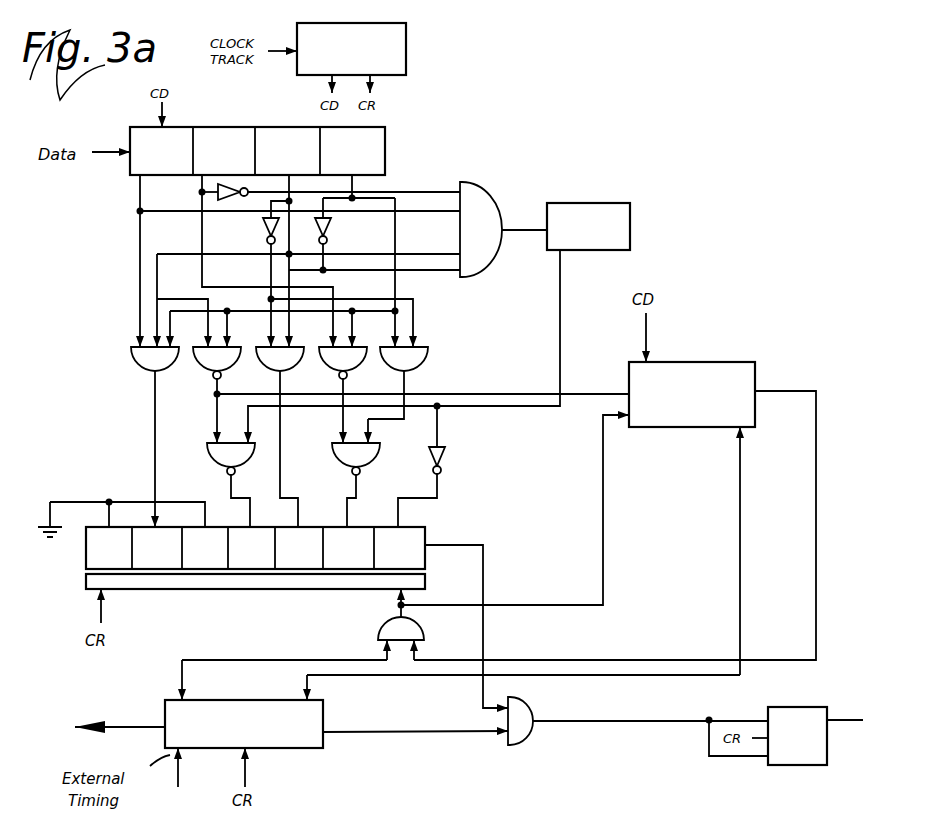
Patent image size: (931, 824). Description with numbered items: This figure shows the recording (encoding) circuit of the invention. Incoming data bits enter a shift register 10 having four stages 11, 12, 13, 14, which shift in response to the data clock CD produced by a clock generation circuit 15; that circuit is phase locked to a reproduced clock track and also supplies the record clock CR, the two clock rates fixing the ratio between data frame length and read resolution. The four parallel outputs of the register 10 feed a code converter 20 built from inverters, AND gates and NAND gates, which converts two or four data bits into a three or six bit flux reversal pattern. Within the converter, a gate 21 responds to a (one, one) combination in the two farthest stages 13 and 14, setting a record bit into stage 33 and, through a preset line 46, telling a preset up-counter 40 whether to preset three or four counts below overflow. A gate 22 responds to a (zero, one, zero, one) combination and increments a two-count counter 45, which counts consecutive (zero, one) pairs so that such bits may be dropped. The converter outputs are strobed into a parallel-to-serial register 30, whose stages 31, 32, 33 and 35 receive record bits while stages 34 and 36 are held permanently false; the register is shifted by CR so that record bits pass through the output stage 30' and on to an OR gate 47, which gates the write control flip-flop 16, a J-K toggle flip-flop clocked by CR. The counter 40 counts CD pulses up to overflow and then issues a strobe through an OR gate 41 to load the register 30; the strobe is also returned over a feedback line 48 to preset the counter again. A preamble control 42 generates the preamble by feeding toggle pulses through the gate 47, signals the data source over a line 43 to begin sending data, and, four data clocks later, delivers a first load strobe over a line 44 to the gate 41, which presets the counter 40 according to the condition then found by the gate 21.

The shift register 10 is at (278, 140).
The register stage 11 is at (151, 151).
The register stage 12 is at (214, 151).
The register stage 13 is at (276, 151).
The register stage 14 is at (341, 151).
The clock generation circuit 15 is at (400, 25).
The write control flip-flop 16 is at (807, 707).
The code converter 20 is at (260, 351).
The gate 21 is at (200, 358).
The gate 22 is at (475, 203).
The register 30 is at (224, 562).
The output stage 30' is at (404, 548).
The register stage 31 is at (355, 548).
The register stage 32 is at (305, 548).
The register stage 33 is at (257, 548).
The register stage 34 is at (211, 548).
The register stage 35 is at (164, 548).
The register stage 36 is at (114, 548).
The preset up-counter 40 is at (720, 362).
The OR gate 41 is at (398, 628).
The preamble control 42 is at (310, 718).
The line 43 is at (137, 724).
The control line 44 is at (292, 660).
The counter 45 is at (605, 203).
The preset line 46 is at (488, 395).
The OR gate 47 is at (520, 705).
The reset line 48 is at (739, 558).